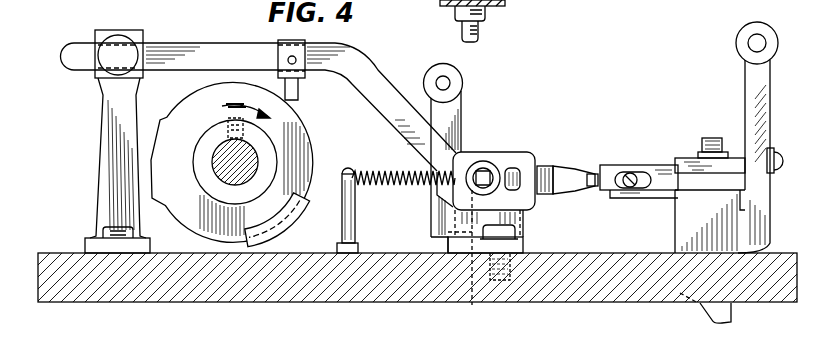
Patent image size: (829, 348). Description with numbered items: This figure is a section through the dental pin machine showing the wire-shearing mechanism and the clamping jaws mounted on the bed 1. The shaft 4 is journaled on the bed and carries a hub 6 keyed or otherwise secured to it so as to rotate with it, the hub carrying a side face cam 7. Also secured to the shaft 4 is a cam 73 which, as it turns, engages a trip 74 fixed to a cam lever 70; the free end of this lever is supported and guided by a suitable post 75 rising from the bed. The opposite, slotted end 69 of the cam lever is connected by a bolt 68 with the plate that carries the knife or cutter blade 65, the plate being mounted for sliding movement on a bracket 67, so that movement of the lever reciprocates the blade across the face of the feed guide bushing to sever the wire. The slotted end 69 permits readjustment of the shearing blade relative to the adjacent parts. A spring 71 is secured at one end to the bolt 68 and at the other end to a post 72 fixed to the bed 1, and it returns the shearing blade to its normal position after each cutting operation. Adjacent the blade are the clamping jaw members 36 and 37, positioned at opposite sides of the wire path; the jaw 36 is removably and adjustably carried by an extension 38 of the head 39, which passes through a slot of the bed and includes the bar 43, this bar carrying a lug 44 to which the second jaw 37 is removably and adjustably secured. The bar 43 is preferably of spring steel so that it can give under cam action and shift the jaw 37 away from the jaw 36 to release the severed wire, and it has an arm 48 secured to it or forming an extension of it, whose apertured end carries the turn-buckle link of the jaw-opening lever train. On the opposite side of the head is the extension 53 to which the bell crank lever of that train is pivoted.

The bed 1 is at (54, 300).
The shaft 4 is at (232, 152).
The hub 6 is at (192, 160).
The side face cam 7 is at (278, 232).
The clamping jaw member 36 is at (590, 171).
The clamping jaw member 37 is at (606, 170).
The extension 38 is at (548, 168).
The head 39 is at (432, 228).
The bar 43 is at (732, 324).
The lug 44 is at (657, 172).
The arm 48 is at (748, 80).
The extension 53 is at (452, 102).
The knife or cutter blade 65 is at (576, 192).
The bracket 67 is at (524, 227).
The bolt 68 is at (483, 165).
The slotted end 69 is at (515, 158).
The cam lever 70 is at (259, 107).
The spring 71 is at (393, 186).
The post 72 is at (357, 227).
The cam 73 is at (310, 148).
The trip 74 is at (300, 97).
The post 75 is at (106, 95).